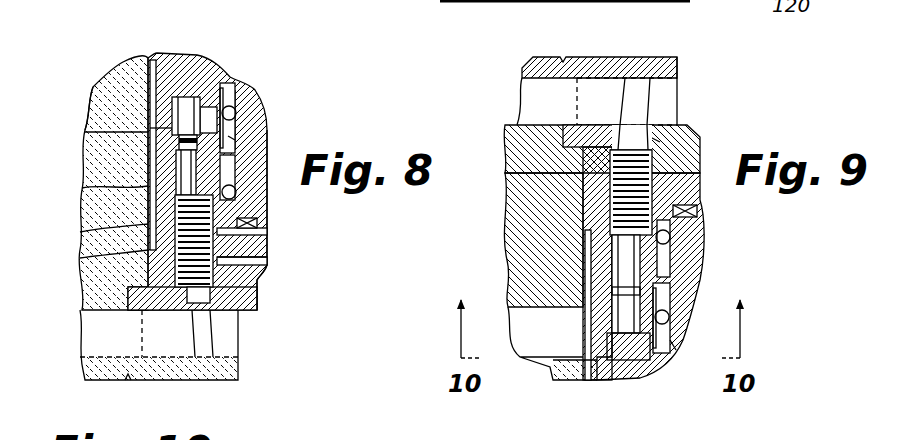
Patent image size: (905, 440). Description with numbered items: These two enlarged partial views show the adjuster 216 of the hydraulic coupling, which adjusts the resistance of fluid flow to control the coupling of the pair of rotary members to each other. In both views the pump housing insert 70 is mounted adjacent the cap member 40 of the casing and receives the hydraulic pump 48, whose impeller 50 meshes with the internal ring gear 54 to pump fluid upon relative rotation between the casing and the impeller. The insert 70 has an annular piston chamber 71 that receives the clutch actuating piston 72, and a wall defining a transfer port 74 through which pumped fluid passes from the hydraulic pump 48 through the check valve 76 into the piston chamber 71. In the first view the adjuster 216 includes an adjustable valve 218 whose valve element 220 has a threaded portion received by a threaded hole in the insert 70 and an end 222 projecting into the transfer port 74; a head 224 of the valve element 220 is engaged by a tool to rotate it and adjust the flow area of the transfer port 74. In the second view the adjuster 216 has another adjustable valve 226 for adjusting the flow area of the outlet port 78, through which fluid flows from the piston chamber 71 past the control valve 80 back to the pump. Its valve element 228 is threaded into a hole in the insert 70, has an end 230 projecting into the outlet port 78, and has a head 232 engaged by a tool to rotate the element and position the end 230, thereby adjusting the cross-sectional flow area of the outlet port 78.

In FIG. 8, the cap member 40 is at (75, 300).
In FIG. 9, the cap member 40 is at (507, 127).
In FIG. 8, the hydraulic pump 48 is at (85, 79).
In FIG. 9, the hydraulic pump 48 is at (503, 167).
In FIG. 8, the impeller 50 is at (107, 107).
In FIG. 9, the impeller 50 is at (530, 200).
In FIG. 8, the internal ring gear 54 is at (100, 152).
In FIG. 9, the internal ring gear 54 is at (567, 363).
In FIG. 8, the pump housing insert 70 is at (213, 67).
In FIG. 9, the pump housing insert 70 is at (603, 370).
In FIG. 8, the piston chamber 71 is at (237, 90).
In FIG. 9, the piston chamber 71 is at (667, 285).
In FIG. 8, the clutch actuating piston 72 is at (250, 107).
In FIG. 9, the clutch actuating piston 72 is at (703, 242).
In FIG. 8, the transfer port 74 is at (208, 113).
In FIG. 8, the check valve 76 is at (235, 137).
In FIG. 9, the outlet port 78 is at (642, 323).
In FIG. 9, the control valve 80 is at (672, 345).
In FIG. 8, the adjuster 216 is at (235, 248).
In FIG. 9, the adjuster 216 is at (667, 137).
In FIG. 8, the adjustable valve 218 is at (148, 250).
In FIG. 8, the valve element 220 is at (172, 250).
In FIG. 8, the end 222 is at (180, 125).
In FIG. 8, the head 224 is at (187, 337).
In FIG. 9, the adjustable valve 226 is at (703, 150).
In FIG. 9, the valve element 228 is at (668, 190).
In FIG. 9, the end 230 is at (617, 327).
In FIG. 9, the head 232 is at (660, 97).